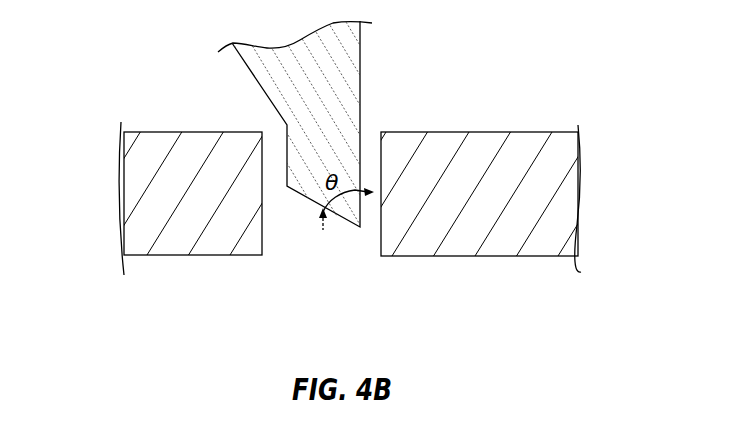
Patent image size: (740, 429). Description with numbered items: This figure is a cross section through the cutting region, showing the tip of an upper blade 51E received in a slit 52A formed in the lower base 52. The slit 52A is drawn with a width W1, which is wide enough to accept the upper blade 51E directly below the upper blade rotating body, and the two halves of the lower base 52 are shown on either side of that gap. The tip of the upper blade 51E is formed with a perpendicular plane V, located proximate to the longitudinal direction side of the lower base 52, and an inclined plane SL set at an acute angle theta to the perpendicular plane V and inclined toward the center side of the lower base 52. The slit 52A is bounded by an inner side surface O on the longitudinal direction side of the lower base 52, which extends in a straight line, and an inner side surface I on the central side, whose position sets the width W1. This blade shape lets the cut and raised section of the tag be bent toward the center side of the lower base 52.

The upper blade 51E is at (350, 77).
The lower base 52 is at (524, 140).
The slit 52A is at (268, 240).
The inclined plane SL is at (335, 190).
The inner side surface I is at (262, 143).
The inner side surface O is at (382, 166).
The perpendicular plane V is at (362, 211).
The width W1 is at (381, 258).